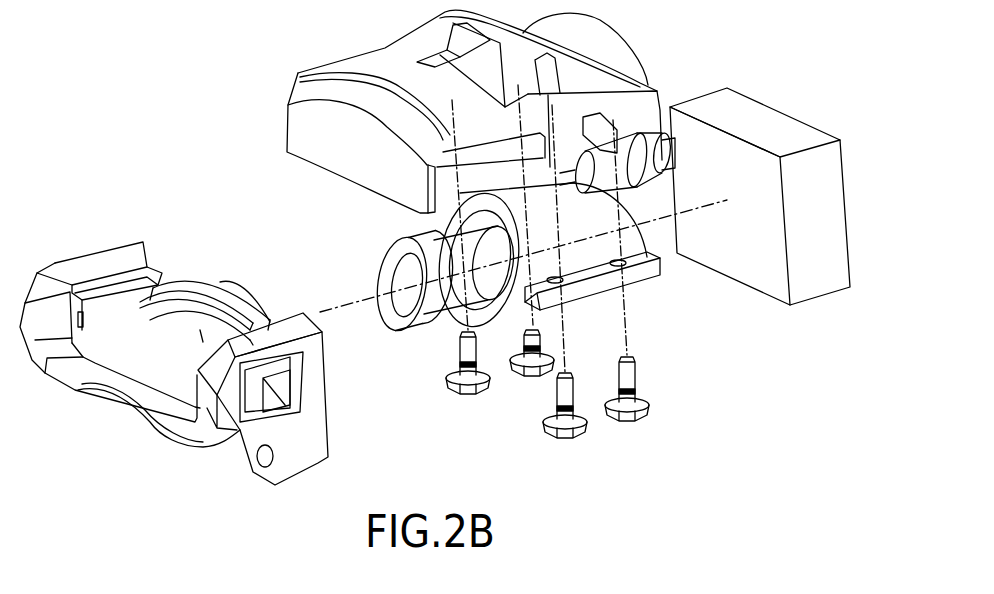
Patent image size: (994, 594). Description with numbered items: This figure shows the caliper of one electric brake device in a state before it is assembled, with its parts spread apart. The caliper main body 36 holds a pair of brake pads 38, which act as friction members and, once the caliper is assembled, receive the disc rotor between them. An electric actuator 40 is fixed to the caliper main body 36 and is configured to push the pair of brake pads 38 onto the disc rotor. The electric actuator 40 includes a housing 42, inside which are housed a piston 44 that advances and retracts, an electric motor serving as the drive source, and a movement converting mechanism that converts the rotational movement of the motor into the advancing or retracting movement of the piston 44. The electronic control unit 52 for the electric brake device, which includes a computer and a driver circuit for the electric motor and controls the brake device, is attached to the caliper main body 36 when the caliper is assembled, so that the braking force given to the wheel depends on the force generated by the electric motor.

The caliper main body 36 is at (90, 262).
The brake pads 38 is at (165, 288).
The electric actuator 40 is at (598, 325).
The housing 42 is at (520, 330).
The piston 44 is at (390, 247).
The electronic control unit for the electric brake device 52 is at (787, 123).